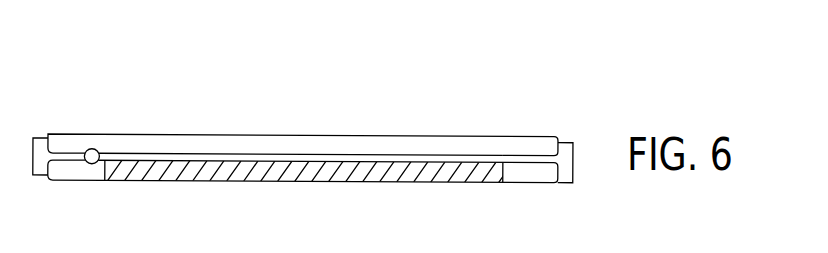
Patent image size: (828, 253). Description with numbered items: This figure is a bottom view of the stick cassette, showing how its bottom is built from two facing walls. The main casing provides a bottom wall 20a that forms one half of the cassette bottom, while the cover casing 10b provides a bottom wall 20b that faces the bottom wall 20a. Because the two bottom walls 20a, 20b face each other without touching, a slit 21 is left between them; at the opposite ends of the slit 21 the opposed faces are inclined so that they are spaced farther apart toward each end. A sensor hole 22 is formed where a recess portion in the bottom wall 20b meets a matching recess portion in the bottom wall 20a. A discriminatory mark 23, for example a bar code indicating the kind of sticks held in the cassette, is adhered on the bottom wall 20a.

The cover casing 10b is at (356, 128).
The bottom wall 20a is at (551, 178).
The bottom wall 20b is at (551, 141).
The slit 21 is at (511, 159).
The sensor hole 22 is at (92, 148).
The discriminatory mark 23 is at (467, 183).